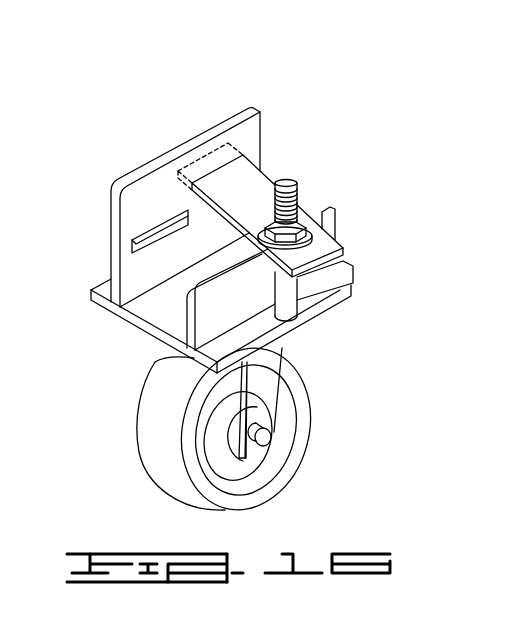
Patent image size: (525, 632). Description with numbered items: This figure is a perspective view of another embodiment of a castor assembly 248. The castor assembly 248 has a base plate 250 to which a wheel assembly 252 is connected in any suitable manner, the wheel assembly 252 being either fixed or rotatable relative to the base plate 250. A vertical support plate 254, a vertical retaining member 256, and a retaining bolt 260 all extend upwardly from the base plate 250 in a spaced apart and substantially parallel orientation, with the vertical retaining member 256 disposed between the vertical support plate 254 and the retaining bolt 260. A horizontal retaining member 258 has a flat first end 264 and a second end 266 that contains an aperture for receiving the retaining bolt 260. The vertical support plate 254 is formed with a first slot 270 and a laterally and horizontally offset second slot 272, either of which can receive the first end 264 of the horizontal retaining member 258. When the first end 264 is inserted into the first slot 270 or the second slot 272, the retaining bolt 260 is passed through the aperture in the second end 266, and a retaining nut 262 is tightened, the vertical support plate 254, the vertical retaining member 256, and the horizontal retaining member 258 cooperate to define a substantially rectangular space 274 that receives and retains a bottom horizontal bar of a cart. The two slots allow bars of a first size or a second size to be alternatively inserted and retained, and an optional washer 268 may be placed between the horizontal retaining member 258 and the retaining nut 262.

The castor assembly 248 is at (86, 117).
The base plate 250 is at (220, 350).
The wheel assembly 252 is at (270, 418).
The vertical support plate 254 is at (247, 128).
The vertical retaining member 256 is at (212, 318).
The horizontal retaining member 258 is at (272, 180).
The retaining bolt 260 is at (292, 307).
The retaining nut 262 is at (300, 212).
The first end 264 is at (209, 162).
The second end 266 is at (334, 247).
The washer 268 is at (326, 210).
The first slot 270 is at (145, 242).
The second slot 272 is at (258, 186).
The substantially rectangular space 274 is at (148, 272).